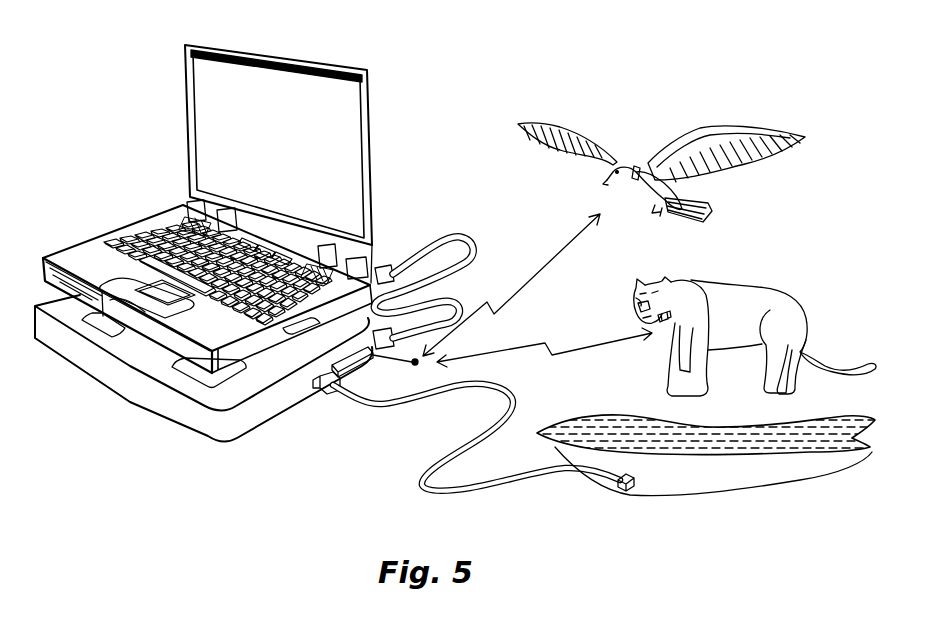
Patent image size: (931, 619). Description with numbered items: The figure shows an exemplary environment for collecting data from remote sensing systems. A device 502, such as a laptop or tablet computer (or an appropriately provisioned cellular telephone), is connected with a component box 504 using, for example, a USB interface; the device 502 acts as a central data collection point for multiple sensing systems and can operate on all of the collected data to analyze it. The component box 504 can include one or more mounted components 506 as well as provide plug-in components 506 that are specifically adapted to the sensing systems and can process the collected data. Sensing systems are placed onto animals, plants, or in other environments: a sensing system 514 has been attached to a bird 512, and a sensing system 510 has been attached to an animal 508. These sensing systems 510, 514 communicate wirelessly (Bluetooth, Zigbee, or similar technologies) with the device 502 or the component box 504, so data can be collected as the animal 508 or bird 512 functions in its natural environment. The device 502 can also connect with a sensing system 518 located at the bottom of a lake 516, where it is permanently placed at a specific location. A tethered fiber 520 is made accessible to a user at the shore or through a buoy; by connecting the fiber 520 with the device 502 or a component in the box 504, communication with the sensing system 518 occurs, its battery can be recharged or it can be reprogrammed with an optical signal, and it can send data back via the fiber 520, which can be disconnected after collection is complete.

The device 502 is at (243, 137).
The component box 504 is at (266, 408).
The components 506 is at (172, 367).
The animal 508 is at (762, 290).
The sensing system 510 is at (660, 333).
The bird 512 is at (708, 122).
The sensing system 514 is at (635, 181).
The lake 516 is at (752, 465).
The sensing system 518 is at (627, 488).
The tethered fiber 520 is at (486, 492).